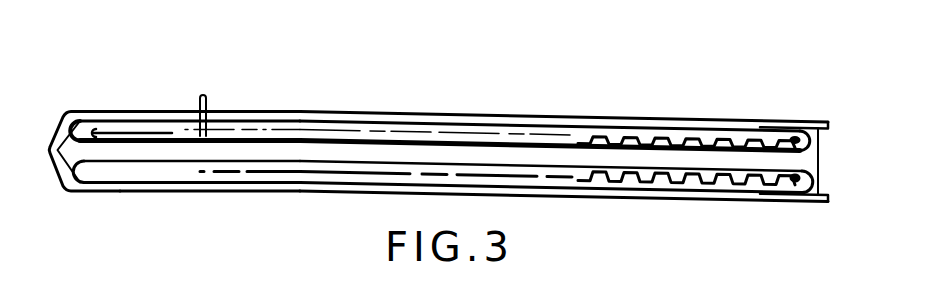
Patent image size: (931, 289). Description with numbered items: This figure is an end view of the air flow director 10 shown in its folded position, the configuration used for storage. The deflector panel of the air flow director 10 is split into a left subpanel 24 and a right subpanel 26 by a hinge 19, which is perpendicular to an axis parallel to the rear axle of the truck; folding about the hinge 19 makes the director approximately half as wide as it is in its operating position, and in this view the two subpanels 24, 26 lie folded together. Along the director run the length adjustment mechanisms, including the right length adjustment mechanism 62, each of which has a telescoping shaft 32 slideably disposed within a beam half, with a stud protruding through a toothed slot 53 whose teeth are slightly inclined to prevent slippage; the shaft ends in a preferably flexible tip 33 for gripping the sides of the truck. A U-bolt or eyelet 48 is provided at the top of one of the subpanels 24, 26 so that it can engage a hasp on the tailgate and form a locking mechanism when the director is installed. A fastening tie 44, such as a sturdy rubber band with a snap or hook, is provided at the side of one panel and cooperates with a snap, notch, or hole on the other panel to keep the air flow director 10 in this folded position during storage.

The air flow director 10 is at (724, 69).
The hinge 19 is at (59, 166).
The left subpanel 24 is at (391, 112).
The right subpanel 26 is at (306, 198).
The telescoping shaft 32 is at (802, 124).
The tip 33 is at (798, 193).
The fastening tie 44 is at (819, 158).
The U-bolt or eyelet 48 is at (210, 104).
The toothed slot 53 is at (641, 111).
The right length adjustment mechanism 62 is at (673, 207).